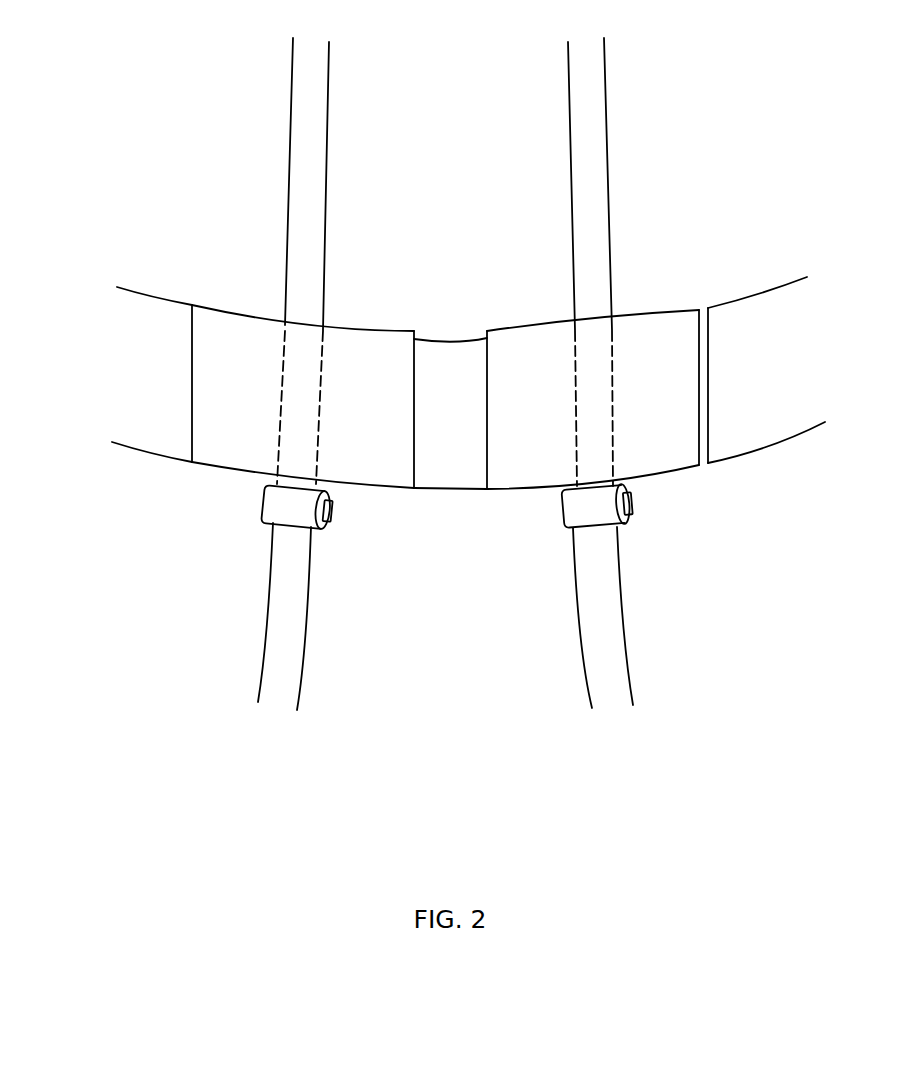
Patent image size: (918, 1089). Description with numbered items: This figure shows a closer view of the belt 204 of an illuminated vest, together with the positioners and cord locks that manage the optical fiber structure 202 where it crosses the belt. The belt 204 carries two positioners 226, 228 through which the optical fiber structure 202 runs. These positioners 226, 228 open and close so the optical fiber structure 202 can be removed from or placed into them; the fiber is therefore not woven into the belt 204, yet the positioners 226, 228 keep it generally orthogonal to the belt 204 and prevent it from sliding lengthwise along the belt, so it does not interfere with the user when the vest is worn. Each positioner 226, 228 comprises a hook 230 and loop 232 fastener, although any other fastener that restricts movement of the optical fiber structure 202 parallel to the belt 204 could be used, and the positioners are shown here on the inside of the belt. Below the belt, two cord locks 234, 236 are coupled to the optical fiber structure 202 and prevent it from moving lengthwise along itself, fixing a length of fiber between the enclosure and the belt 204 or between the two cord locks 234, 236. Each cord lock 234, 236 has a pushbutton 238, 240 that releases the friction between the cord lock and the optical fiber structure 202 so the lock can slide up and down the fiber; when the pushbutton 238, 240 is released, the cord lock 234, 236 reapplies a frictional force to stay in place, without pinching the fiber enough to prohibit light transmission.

The optical fiber structure 202 is at (315, 146).
The belt 204 is at (117, 152).
The positioner 226 is at (216, 458).
The positioner 228 is at (512, 476).
The hook 230 is at (650, 335).
The loop 232 is at (703, 308).
The cord lock 234 is at (303, 510).
The cord lock 236 is at (575, 515).
The pushbutton 238 is at (333, 506).
The pushbutton 240 is at (633, 503).